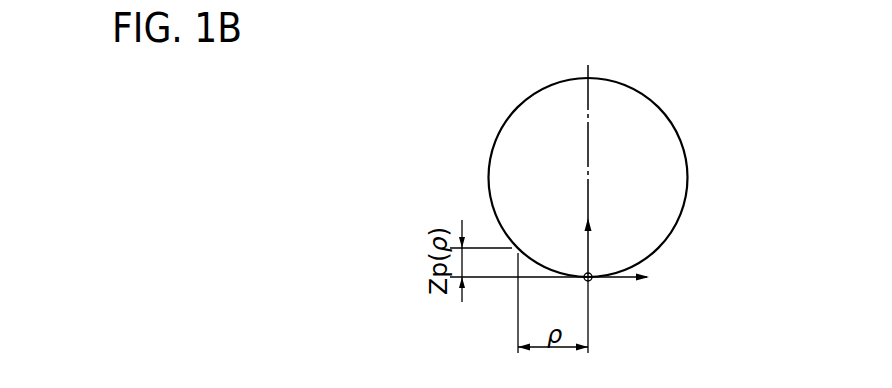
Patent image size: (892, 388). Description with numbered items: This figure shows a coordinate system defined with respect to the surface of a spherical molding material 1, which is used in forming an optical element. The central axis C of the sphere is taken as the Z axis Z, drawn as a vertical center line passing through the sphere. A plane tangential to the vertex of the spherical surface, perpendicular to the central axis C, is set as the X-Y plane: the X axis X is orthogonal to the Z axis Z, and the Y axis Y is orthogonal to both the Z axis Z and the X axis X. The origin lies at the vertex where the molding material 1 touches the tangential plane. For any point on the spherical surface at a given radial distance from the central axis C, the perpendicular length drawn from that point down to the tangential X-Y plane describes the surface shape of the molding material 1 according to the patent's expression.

The molding material 1 is at (688, 178).
The central axis C is at (587, 128).
The X axis X is at (595, 290).
The Y axis Y is at (558, 279).
The Z axis Z is at (598, 236).